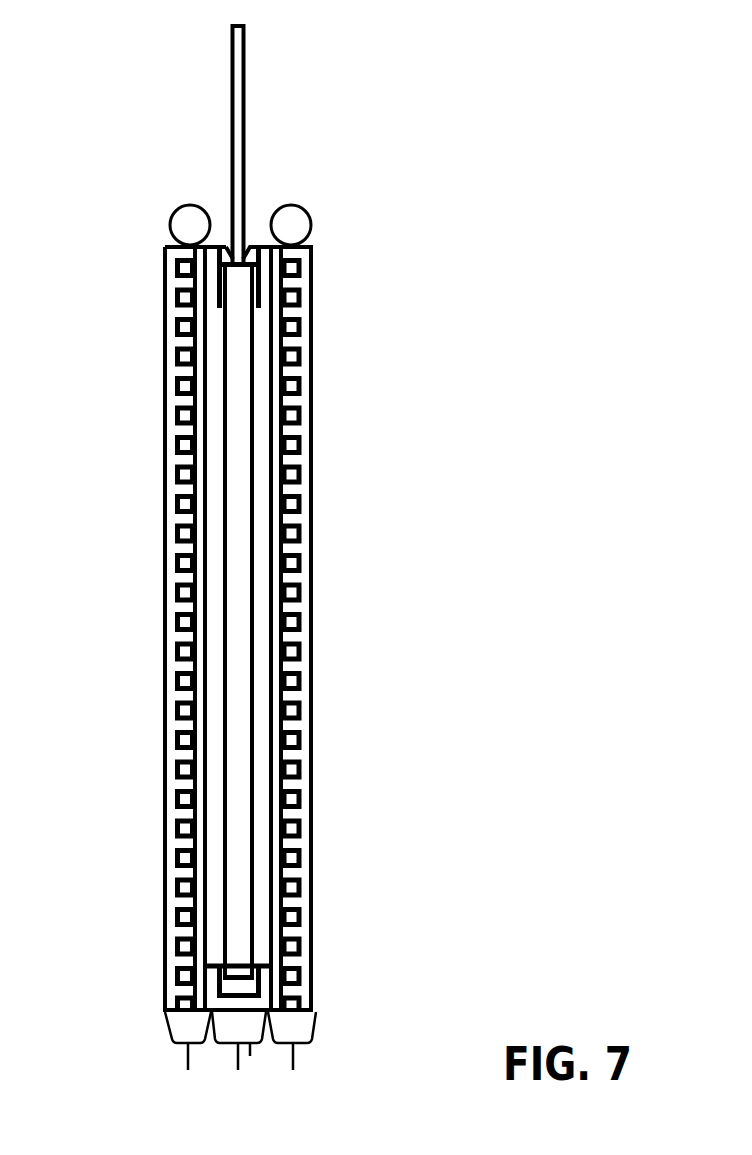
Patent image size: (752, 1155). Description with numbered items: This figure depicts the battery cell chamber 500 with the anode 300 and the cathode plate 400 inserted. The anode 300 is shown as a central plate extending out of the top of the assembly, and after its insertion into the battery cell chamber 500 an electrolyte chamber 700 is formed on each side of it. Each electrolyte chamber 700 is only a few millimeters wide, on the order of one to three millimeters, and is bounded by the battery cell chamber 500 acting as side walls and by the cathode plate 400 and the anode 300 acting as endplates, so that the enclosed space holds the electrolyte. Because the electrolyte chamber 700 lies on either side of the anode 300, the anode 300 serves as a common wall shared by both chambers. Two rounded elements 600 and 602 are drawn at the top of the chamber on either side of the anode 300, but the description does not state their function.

The anode 300 is at (245, 59).
The first ball 600 is at (176, 211).
The second ball 602 is at (305, 212).
The electrolyte chamber 700 is at (256, 403).
The cathode plate 400 is at (243, 1064).
The battery cell chamber 500 is at (239, 1064).